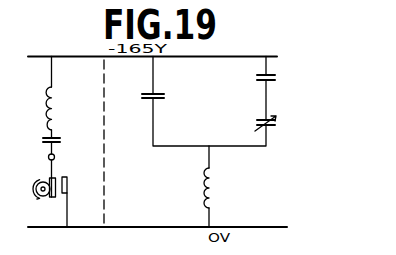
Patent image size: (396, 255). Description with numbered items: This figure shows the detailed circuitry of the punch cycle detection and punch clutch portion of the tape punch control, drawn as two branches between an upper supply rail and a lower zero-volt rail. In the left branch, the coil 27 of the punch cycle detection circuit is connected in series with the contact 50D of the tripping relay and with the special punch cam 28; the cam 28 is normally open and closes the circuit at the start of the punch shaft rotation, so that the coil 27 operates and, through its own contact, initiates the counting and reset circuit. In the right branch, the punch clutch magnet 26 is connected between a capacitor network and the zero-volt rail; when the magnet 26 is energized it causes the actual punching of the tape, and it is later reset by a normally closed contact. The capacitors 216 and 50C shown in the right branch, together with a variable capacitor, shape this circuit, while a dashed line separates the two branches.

The coil 27 is at (48, 105).
The contact 50D is at (55, 135).
The special punch cam 28 is at (37, 182).
The capacitor 216 is at (157, 92).
The capacitor 50C is at (272, 70).
The punch clutch magnet 26 is at (208, 190).